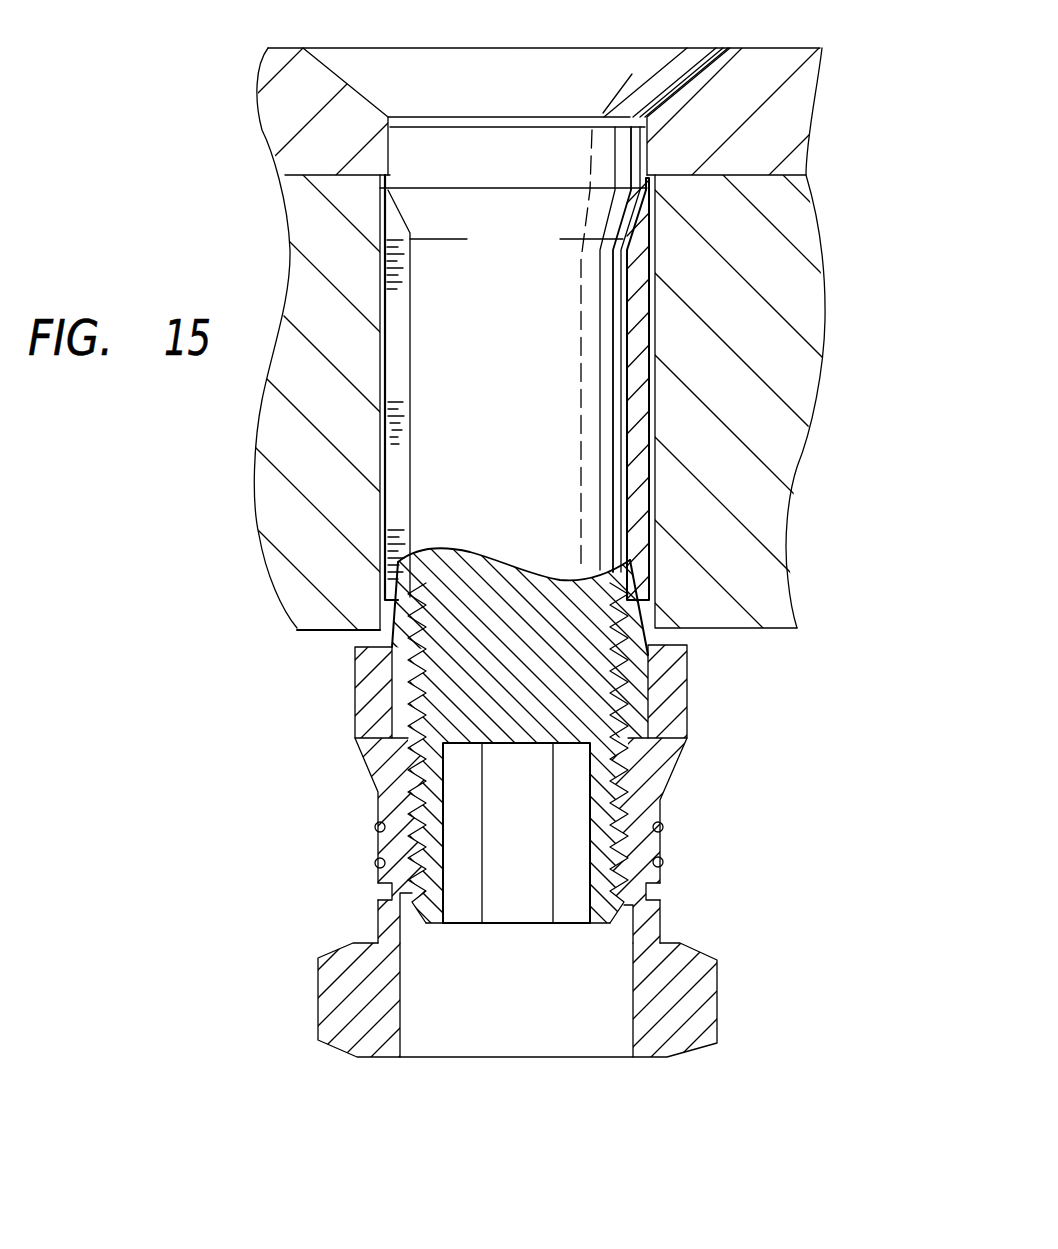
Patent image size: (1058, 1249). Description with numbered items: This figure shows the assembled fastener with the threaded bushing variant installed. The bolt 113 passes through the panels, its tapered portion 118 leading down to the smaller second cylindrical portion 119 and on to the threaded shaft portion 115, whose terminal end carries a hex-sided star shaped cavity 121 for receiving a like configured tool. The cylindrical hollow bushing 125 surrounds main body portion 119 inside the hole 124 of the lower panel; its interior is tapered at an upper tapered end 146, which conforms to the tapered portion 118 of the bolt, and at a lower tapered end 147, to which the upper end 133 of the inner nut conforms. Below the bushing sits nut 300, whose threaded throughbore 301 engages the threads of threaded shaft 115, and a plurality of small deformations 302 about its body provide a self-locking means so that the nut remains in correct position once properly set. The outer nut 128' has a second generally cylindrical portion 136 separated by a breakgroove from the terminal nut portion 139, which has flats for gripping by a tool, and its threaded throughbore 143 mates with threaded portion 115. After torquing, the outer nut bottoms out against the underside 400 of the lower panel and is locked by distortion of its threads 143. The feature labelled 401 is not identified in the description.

The bolt 113 is at (534, 47).
The upper housing plate 401 is at (782, 48).
The tapered portion 118 is at (433, 197).
The upper tapered end 146 is at (392, 218).
The second cylindrical portion 119 is at (568, 365).
The cylindrical hollow bushing 125 is at (383, 463).
The hole 124 is at (640, 485).
The lower tapered end 147 is at (398, 580).
The upper end 133 is at (383, 620).
The bushing 300 is at (394, 682).
The threaded throughbore 301 is at (615, 705).
The threaded shaft portion 115 is at (626, 787).
The threaded throughbore 143 is at (410, 784).
The nut 128' is at (729, 833).
The small deformations 302 is at (374, 827).
The second generally cylindrical portion 136 is at (378, 884).
The hex-sided star shaped cavity 121 is at (531, 890).
The terminal nut portion 139 is at (690, 1050).
The underside 400 is at (730, 628).